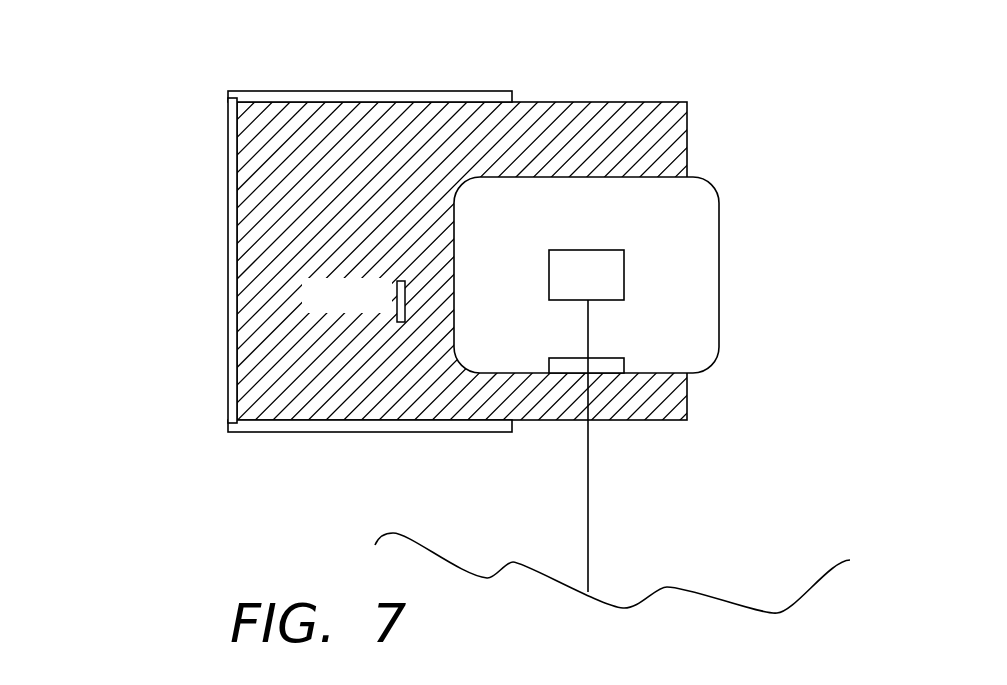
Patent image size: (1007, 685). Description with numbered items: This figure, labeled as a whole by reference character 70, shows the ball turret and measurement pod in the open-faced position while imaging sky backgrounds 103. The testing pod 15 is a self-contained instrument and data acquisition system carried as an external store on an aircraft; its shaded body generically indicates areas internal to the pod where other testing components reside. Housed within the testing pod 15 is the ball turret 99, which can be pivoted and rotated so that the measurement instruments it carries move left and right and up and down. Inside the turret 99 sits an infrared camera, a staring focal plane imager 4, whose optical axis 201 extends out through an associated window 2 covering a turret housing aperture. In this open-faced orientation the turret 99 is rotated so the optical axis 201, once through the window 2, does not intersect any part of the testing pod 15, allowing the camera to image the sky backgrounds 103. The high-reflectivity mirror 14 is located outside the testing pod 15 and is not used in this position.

The ball turret and measurement pod in open-faced position 70 is at (194, 124).
The testing pod 15 is at (377, 92).
The mirror 14 is at (397, 288).
The ball turret 99 is at (723, 233).
The staring focal plane imager 4 is at (574, 258).
The window 2 is at (568, 362).
The optical axis 201 is at (588, 498).
The sky backgrounds 103 is at (765, 607).